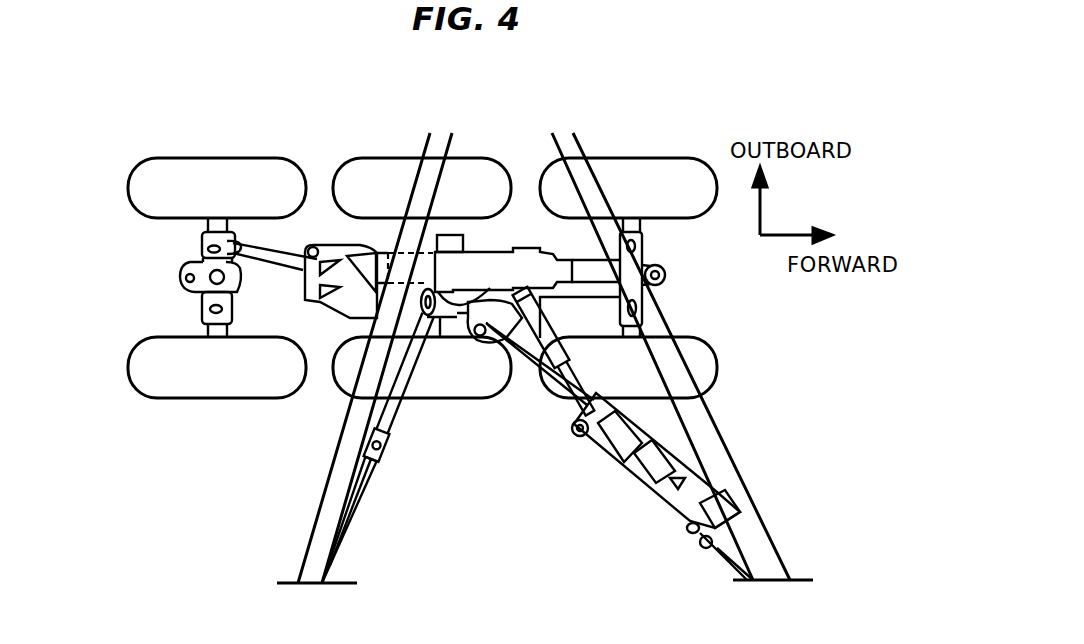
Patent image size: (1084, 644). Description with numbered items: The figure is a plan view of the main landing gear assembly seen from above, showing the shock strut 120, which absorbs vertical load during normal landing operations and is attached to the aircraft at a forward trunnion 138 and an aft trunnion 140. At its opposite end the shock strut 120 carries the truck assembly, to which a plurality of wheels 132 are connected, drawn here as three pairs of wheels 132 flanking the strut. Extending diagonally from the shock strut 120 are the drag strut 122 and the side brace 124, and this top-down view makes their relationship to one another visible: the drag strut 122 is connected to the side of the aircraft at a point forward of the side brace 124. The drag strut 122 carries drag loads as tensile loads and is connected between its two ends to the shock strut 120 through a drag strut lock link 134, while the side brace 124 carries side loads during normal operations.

The wheels 132 is at (200, 170).
The aft trunnion 140 is at (398, 290).
The forward trunnion 138 is at (568, 252).
The shock strut 120 is at (456, 296).
The drag strut lock link 134 is at (553, 397).
The side brace 124 is at (370, 485).
The drag strut 122 is at (640, 477).